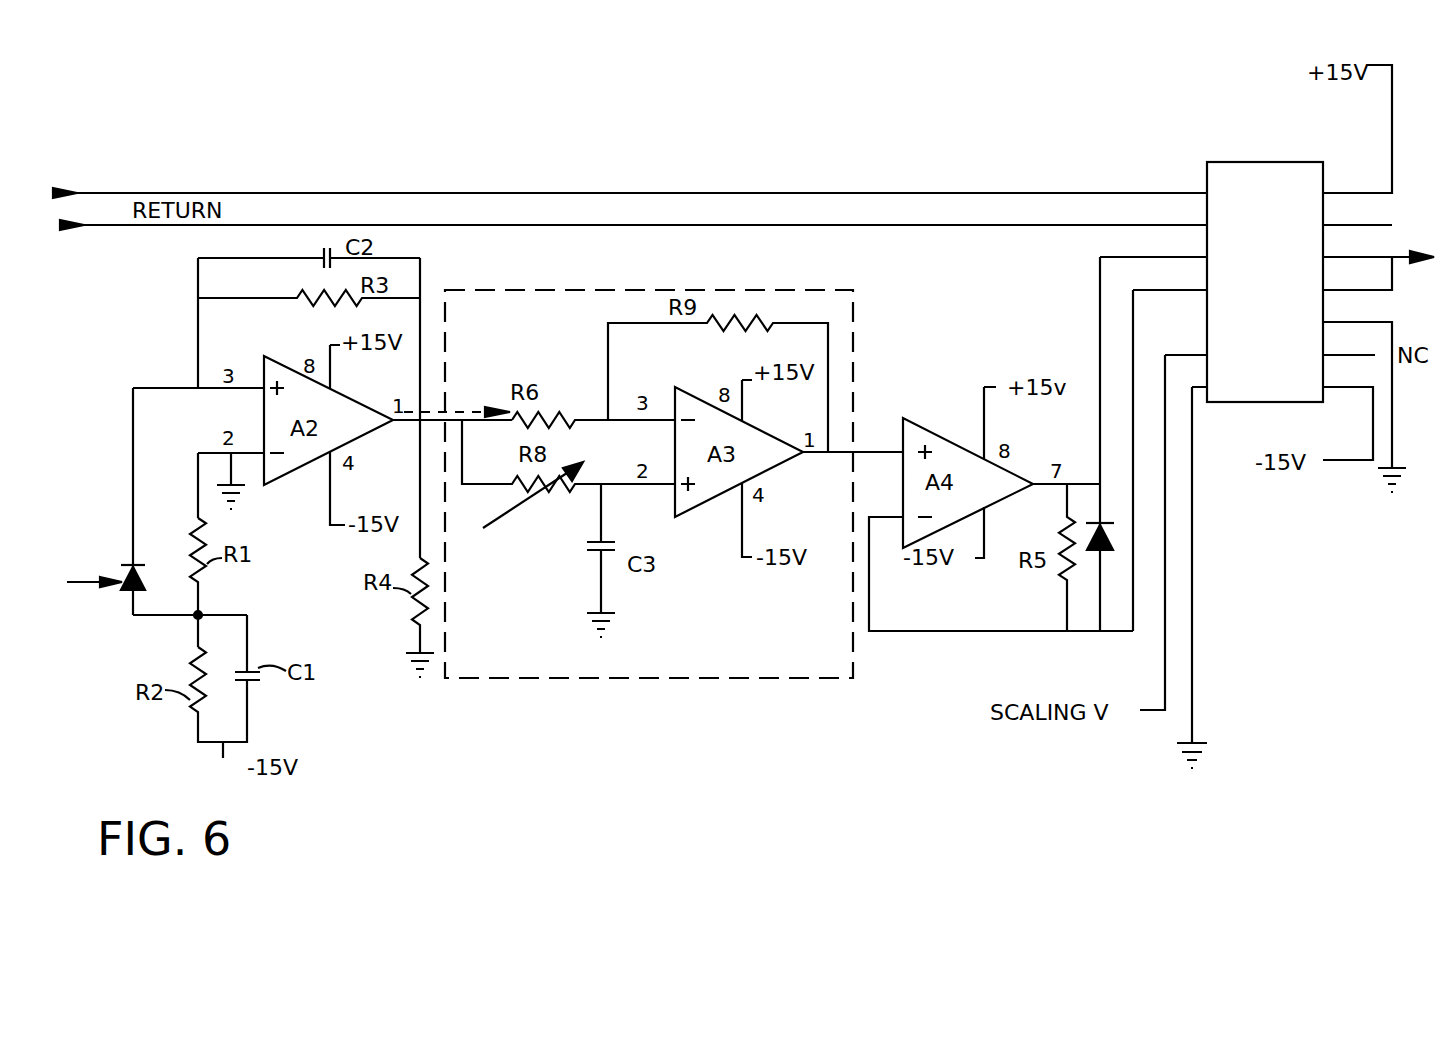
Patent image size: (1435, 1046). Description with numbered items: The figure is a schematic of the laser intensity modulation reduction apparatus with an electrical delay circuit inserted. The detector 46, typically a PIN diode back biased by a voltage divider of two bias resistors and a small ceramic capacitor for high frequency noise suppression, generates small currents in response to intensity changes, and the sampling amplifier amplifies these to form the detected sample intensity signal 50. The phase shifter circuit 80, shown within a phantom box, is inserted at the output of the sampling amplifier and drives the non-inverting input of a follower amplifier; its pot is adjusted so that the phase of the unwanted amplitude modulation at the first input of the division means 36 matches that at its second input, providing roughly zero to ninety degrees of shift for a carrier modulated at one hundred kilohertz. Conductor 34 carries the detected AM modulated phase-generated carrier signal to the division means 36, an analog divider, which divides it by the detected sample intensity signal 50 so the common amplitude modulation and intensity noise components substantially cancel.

The conductor 34 is at (975, 192).
The division means 36 is at (1290, 161).
The detector 46 is at (122, 578).
The detected sample intensity signal 50 is at (450, 413).
The phase shifter circuit 80 is at (805, 660).